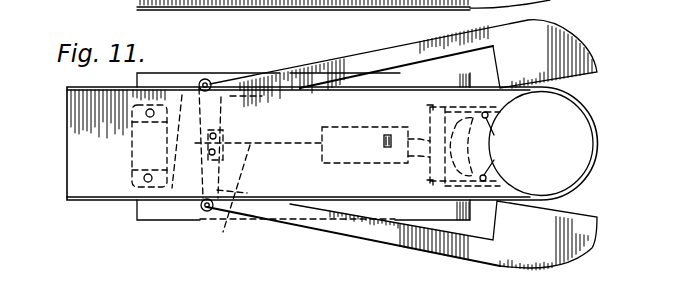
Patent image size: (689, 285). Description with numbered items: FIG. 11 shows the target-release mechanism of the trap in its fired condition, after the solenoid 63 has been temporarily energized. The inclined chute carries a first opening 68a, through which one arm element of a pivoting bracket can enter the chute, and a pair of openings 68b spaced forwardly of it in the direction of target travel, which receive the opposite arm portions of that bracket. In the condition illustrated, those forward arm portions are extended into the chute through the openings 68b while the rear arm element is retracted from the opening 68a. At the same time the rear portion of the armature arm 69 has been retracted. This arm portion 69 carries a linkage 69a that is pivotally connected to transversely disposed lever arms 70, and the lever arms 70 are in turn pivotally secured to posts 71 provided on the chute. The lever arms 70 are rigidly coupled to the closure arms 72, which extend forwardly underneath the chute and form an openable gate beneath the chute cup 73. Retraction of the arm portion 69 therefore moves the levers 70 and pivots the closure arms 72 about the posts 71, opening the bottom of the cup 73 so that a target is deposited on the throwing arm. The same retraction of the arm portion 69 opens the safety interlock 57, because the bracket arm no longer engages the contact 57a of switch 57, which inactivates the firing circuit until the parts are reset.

The safety interlock 57 is at (146, 105).
The contact of switch 57 57a is at (182, 95).
The solenoid 63 is at (327, 150).
The first opening 68a is at (388, 150).
The pair of openings 68b is at (486, 117).
The rear portion of the armature arm 69 is at (82, 113).
The linkage 69a is at (231, 201).
The lever arms 70 is at (212, 82).
The posts 71 is at (204, 214).
The closure arms 72 is at (569, 52).
The chute cup 73 is at (584, 181).